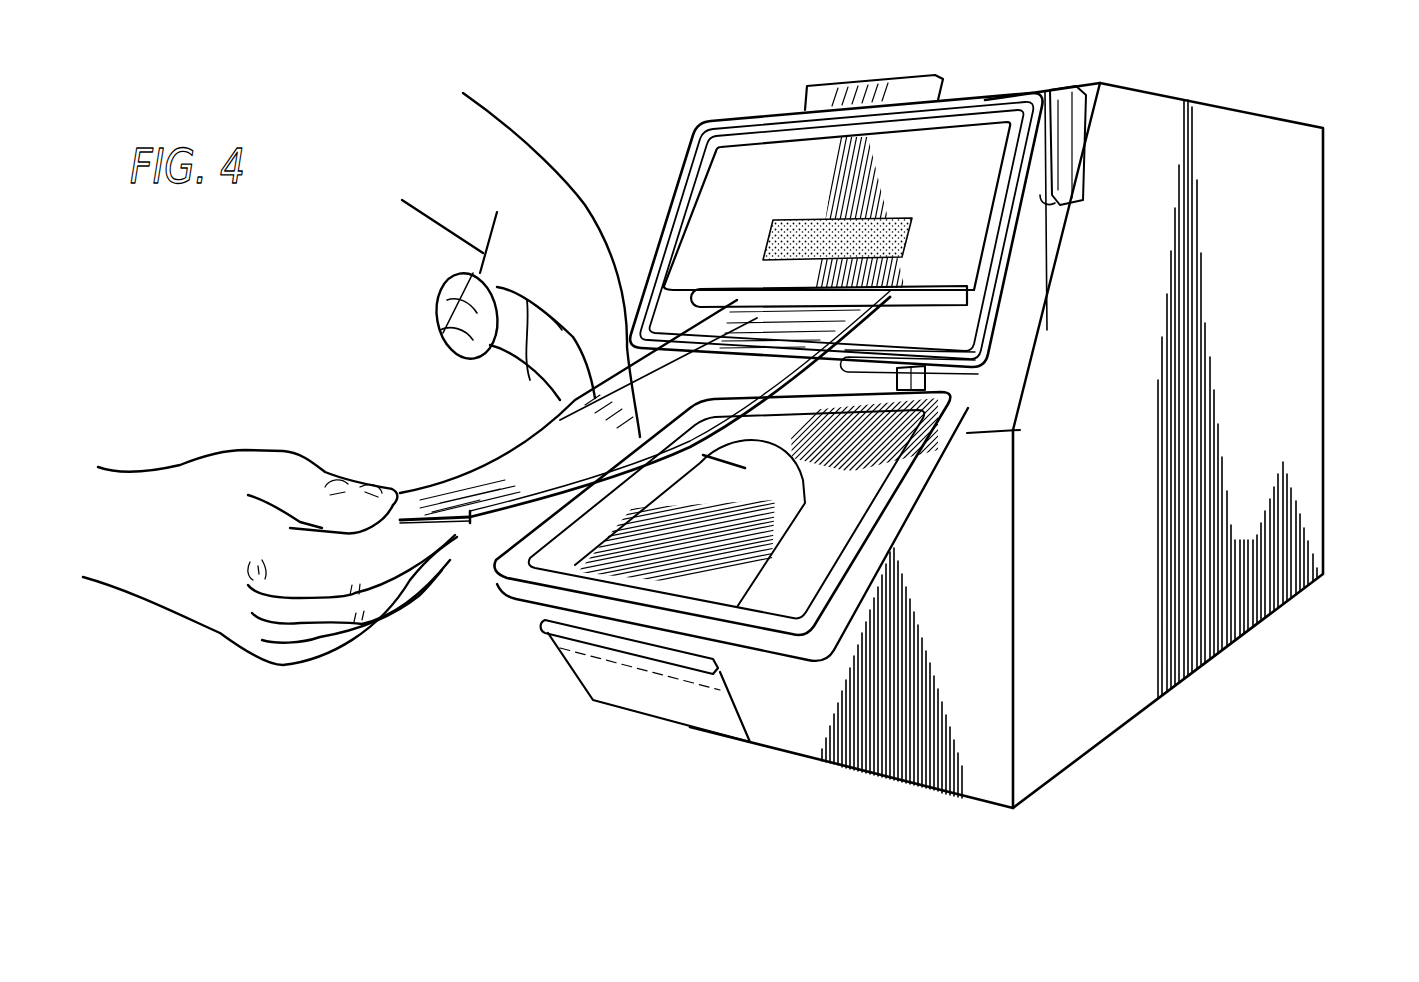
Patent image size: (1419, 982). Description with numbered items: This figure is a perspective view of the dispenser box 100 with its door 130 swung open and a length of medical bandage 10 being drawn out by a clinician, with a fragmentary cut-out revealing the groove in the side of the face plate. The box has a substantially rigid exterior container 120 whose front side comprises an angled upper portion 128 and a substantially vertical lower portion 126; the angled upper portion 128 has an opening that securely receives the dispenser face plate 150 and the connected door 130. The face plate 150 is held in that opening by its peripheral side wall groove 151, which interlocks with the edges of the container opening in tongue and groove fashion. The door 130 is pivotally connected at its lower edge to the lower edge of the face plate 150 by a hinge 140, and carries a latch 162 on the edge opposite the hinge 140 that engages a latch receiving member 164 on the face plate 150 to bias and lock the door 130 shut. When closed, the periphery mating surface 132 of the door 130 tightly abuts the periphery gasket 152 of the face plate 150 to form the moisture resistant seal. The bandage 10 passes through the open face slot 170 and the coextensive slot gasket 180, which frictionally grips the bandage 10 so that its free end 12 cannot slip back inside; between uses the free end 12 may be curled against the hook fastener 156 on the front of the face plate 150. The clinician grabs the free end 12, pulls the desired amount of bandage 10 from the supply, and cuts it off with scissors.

The medical bandage 10 is at (550, 468).
The free end 12 is at (457, 539).
The dispenser box 100 is at (1240, 110).
The exterior container 120 is at (1290, 304).
The substantially vertical lower portion 126 is at (968, 728).
The angled upper portion 128 is at (1045, 232).
The door 130 is at (787, 590).
The periphery mating surface 132 is at (818, 622).
The hinge 140 is at (925, 385).
The dispenser face plate 150 is at (951, 182).
The peripheral side wall groove 151 is at (1045, 172).
The periphery gasket 152 is at (723, 127).
The hook fastener 156 is at (822, 233).
The latch 162 is at (663, 697).
The latch receiving member 164 is at (828, 90).
The open face slot 170 is at (730, 277).
The slot gasket 180 is at (700, 307).